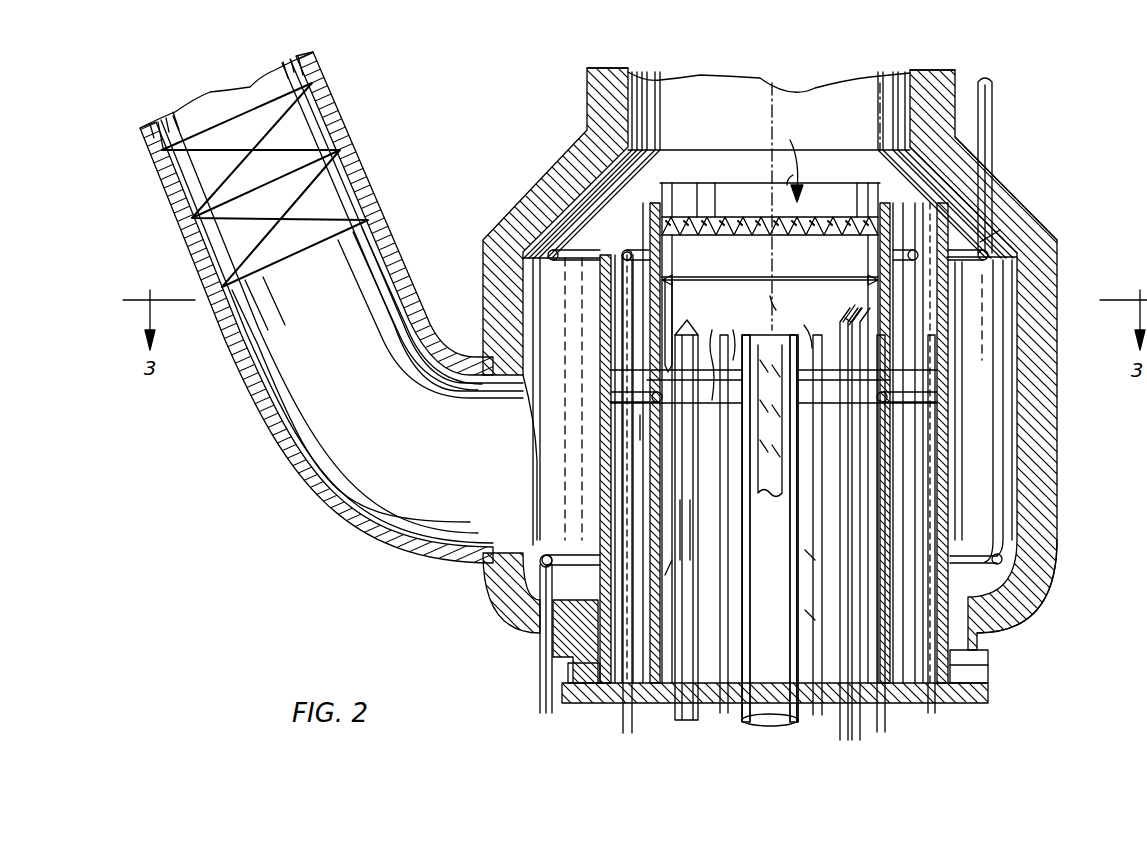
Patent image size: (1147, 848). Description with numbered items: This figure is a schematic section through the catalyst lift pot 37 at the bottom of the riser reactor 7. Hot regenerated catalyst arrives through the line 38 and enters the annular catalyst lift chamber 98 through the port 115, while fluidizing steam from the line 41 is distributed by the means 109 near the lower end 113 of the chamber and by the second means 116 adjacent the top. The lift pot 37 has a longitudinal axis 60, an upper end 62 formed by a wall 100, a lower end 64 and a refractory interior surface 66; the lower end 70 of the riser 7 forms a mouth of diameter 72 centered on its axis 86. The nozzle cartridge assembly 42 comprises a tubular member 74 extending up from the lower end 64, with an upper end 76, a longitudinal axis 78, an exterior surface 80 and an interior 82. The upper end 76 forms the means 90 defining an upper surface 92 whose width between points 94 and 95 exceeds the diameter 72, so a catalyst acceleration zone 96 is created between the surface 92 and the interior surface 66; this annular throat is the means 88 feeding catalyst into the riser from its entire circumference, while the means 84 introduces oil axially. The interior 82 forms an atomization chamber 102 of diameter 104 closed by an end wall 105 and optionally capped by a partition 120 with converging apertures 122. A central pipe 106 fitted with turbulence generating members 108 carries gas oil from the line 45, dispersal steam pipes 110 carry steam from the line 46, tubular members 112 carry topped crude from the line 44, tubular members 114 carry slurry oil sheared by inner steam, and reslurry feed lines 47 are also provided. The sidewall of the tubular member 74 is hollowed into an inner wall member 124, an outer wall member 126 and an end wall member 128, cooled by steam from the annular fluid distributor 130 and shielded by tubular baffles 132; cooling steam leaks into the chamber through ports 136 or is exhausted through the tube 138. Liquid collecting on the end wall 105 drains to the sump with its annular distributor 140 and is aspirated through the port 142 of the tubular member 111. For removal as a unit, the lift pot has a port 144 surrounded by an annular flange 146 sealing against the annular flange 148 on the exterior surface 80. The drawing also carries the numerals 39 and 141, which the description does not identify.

The riser reactor 7 is at (587, 92).
The catalyst lift pot 37 is at (1060, 258).
The line 38 is at (258, 404).
The flow straightener bracing 39 is at (186, 233).
The line 41 is at (981, 70).
The nozzle cartridge assembly 42 is at (588, 732).
The line 44 is at (683, 733).
The line 45 is at (766, 733).
The line 46 is at (623, 740).
The reslurry oil and separator backwash feed lines 47 is at (839, 752).
The longitudinal axis 60 is at (770, 162).
The upper end 62 is at (1003, 180).
The lower end 64 is at (1025, 618).
The interior surface 66 is at (1010, 442).
The lower end 70 is at (904, 140).
The first diameter 72 is at (805, 160).
The tubular member 74 is at (956, 316).
The upper end 76 is at (660, 190).
The longitudinal axis 78 is at (766, 296).
The exterior surface 80 is at (956, 470).
The interior 82 is at (798, 175).
The means for introducing a first material 84 is at (713, 290).
The longitudinal axis 86 is at (770, 108).
The means for introducing a second material 88 is at (890, 180).
The means for defining an upper surface 90 is at (640, 205).
The upper surface 92 is at (912, 212).
The point 94 is at (606, 252).
The point 95 is at (972, 260).
The catalyst acceleration zone 96 is at (579, 227).
The catalyst lift chamber 98 is at (559, 437).
The wall 100 is at (1048, 230).
The atomization chamber 102 is at (728, 264).
The fourth diameter 104 is at (785, 278).
The atomization chamber end wall 105 is at (808, 326).
The central pipe 106 is at (773, 421).
The turbulence generating members 108 is at (772, 408).
The means for distributing a fluidizing gas 109 is at (592, 546).
The tubular members 110 is at (795, 613).
The tubular member 111 is at (697, 530).
The tubular members 112 is at (668, 563).
The lower end 113 is at (576, 628).
The tubular members 114 is at (795, 552).
The port 115 is at (518, 462).
The second means for distributing a fluidizing gas 116 is at (1018, 214).
The partition 120 is at (822, 236).
The apertures 122 is at (786, 237).
The inner wall member 124 is at (900, 362).
The outer wall member 126 is at (925, 385).
The end wall member 128 is at (912, 230).
The annular fluid distributor 130 is at (600, 268).
The radiation shielding members 132 is at (640, 400).
The ports 136 is at (765, 326).
The tube or port 138 is at (928, 735).
The annular distributor 140 is at (726, 348).
The guide 141 is at (645, 427).
The port 142 is at (730, 335).
The port 144 is at (985, 650).
The annular flange 146 is at (988, 672).
The annular flange 148 is at (990, 693).